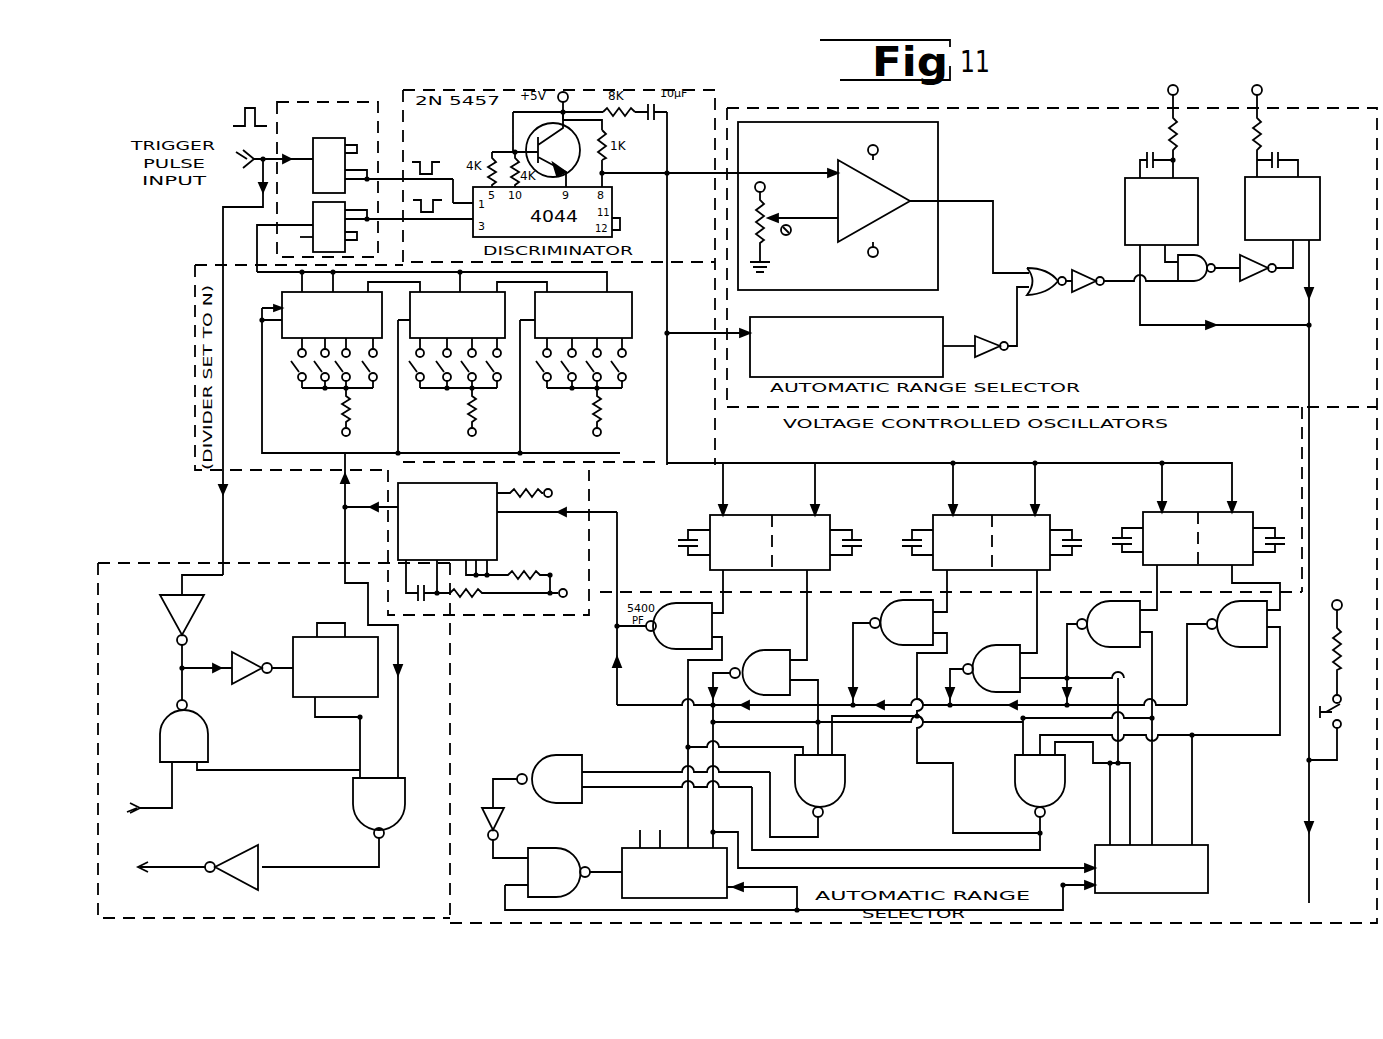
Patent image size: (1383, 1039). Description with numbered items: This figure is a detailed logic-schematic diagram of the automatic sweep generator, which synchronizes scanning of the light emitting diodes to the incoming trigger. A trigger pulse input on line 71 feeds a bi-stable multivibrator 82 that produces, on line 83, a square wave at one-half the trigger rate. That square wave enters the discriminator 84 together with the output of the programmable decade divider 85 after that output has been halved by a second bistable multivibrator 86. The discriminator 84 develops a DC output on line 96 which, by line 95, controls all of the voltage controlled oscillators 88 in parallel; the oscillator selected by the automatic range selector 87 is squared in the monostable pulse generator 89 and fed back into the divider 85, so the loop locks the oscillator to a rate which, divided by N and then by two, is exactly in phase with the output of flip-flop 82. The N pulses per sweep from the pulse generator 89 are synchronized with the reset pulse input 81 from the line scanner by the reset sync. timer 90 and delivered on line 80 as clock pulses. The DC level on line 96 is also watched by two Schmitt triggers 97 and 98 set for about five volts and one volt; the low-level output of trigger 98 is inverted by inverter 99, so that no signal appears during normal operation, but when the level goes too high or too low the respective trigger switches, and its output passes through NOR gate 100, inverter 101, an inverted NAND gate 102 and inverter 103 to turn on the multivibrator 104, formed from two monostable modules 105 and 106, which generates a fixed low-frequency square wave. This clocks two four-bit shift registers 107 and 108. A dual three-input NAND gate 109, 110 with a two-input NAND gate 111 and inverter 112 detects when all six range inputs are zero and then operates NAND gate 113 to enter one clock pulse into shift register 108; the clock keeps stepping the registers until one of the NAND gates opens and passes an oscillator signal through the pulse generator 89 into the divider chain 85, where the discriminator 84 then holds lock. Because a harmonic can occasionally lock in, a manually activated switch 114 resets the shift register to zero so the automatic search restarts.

The trigger pulse input line 71 is at (246, 166).
The clock pulse output line 80 is at (168, 868).
The reset pulse input from line scanner 81 is at (155, 811).
The bi-stable multivibrator 82 is at (337, 138).
The square wave output line 83 is at (392, 170).
The discriminator 84 is at (435, 249).
The programmable decade divider 85 is at (256, 302).
The bistable multivibrator 86 is at (296, 237).
The automatic range selector 87 is at (1138, 386).
The voltage controlled oscillators 88 is at (1210, 433).
The monostable pulse generator 89 is at (577, 549).
The reset sync. timer 90 is at (415, 891).
The oscillator control line 95 is at (922, 463).
The discriminator DC output line 96 is at (692, 176).
The Schmitt trigger 97 is at (940, 165).
The Schmitt trigger 98 is at (943, 322).
The inverter 99 is at (1000, 357).
The NOR gate 100 is at (1043, 290).
The inverter 101 is at (1090, 291).
The NAND gate 102 is at (1190, 291).
The inverter 103 is at (1255, 291).
The multivibrator 104 is at (1232, 219).
The monostable multivibrator module 105 is at (1125, 205).
The monostable multivibrator module 106 is at (1322, 196).
The four-bit shift register 107 is at (1200, 845).
The four-bit shift register 108 is at (624, 846).
The three-input NAND gate 109 is at (848, 798).
The three-input NAND gate 110 is at (1068, 798).
The two-input NAND gate 111 is at (570, 757).
The inverter 112 is at (505, 820).
The NAND gate 113 is at (575, 893).
The manually activated switch 114 is at (1342, 712).